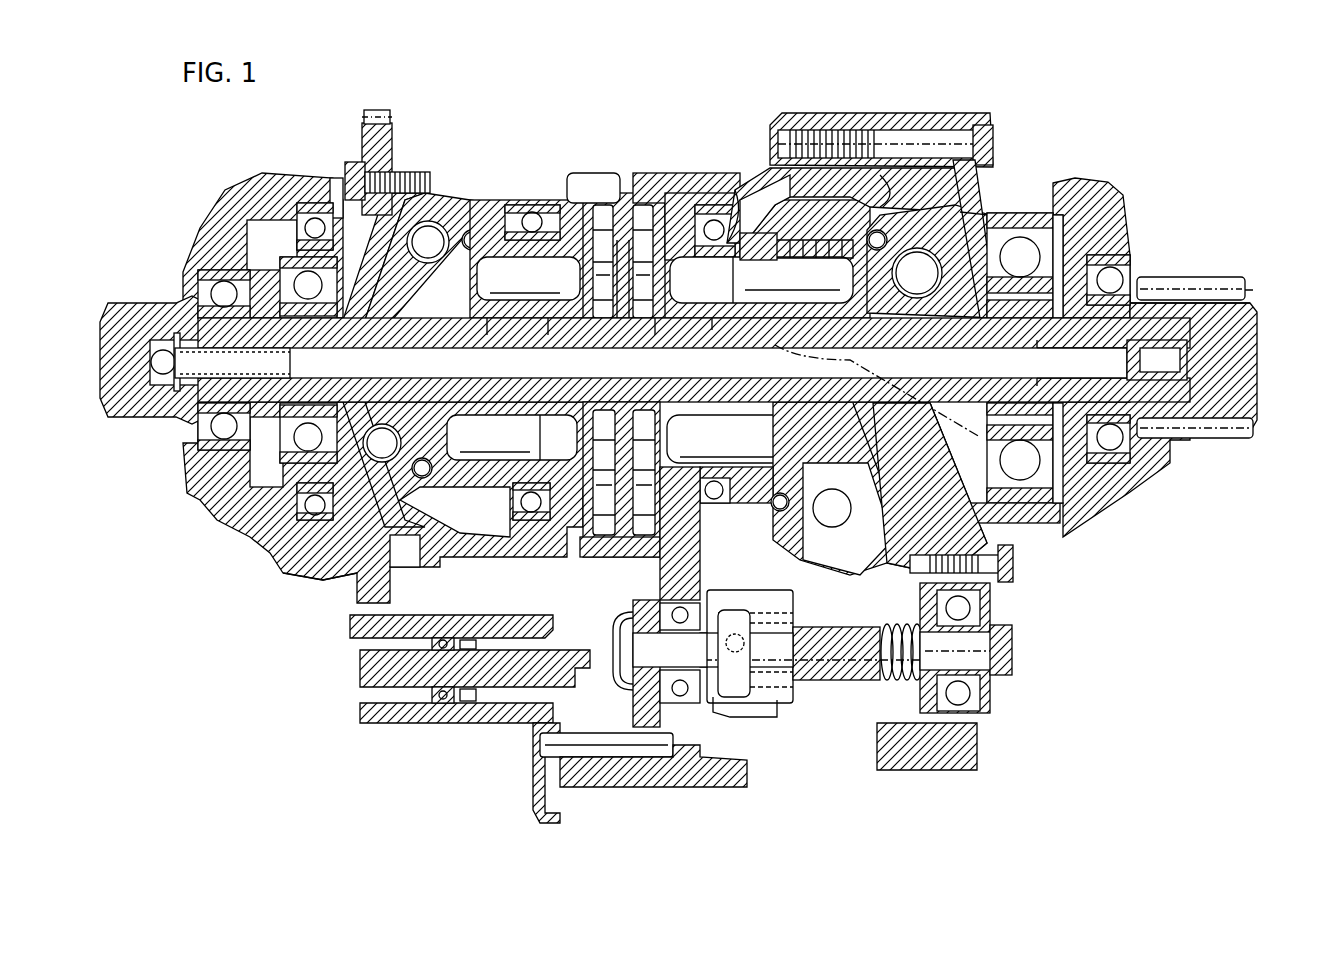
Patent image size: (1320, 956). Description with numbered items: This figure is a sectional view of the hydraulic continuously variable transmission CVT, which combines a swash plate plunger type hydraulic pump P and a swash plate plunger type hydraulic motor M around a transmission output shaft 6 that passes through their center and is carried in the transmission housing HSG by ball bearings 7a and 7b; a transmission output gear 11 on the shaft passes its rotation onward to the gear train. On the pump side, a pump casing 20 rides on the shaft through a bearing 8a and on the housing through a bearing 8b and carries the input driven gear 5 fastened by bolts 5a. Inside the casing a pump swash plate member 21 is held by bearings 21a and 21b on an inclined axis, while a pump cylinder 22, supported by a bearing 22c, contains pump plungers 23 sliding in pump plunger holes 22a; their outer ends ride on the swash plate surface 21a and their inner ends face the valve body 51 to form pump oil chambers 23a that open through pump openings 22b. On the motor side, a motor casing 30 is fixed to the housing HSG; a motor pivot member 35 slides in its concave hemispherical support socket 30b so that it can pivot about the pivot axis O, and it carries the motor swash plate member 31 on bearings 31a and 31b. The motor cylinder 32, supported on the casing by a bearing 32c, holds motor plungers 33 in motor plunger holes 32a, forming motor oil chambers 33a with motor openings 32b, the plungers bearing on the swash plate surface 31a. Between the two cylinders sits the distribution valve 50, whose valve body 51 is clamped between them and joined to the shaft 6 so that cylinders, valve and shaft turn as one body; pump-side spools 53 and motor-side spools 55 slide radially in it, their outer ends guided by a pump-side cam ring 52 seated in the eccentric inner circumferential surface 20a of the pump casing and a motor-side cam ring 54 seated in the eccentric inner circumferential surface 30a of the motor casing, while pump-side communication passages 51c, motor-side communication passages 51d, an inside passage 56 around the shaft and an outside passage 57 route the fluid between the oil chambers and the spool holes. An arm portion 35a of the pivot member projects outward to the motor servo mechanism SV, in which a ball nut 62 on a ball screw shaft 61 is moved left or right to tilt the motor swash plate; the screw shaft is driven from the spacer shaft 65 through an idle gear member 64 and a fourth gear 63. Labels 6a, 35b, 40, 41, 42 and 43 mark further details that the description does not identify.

The input driven gear 5 is at (365, 140).
The bolts 5a is at (348, 175).
The transmission output shaft 6 is at (895, 325).
The shaft bore 6a is at (388, 370).
The ball bearing 7a is at (185, 440).
The ball bearing 7b is at (1133, 442).
The bearing 8a is at (235, 500).
The bearing 8b is at (290, 520).
The transmission output gear 11 is at (1208, 283).
The pump casing 20 is at (503, 540).
The eccentric inner circumferential surface 20a is at (585, 560).
The pump swash plate member 21 is at (450, 270).
The bearing 21a is at (432, 197).
The bearing 21b is at (472, 212).
The pump cylinder 22 is at (487, 525).
The pump plunger hole 22a is at (502, 190).
The pump opening 22b is at (487, 335).
The bearing 22c is at (530, 545).
The pump plunger 23 is at (543, 288).
The pump oil chamber 23a is at (489, 446).
The motor casing 30 is at (910, 128).
The eccentric inner circumferential surface 30a is at (660, 565).
The concave hemispherical support socket 30b is at (892, 194).
The motor swash plate member 31 is at (818, 485).
The bearing 31a is at (965, 200).
The bearing 31b is at (862, 237).
The motor cylinder 32 is at (742, 225).
The motor plunger hole 32a is at (772, 252).
The motor opening 32b is at (712, 330).
The bearing 32c is at (718, 200).
The motor plunger 33 is at (834, 288).
The motor oil chamber 33a is at (722, 288).
The motor pivot member 35 is at (882, 565).
The arm portion 35a is at (795, 690).
The shaft end 35b is at (965, 345).
The spacer 40 is at (1066, 270).
The nut 41 is at (1012, 338).
The bearing 42 is at (1050, 225).
The housing cover 43 is at (1085, 225).
The distribution valve 50 is at (715, 192).
The valve body 51 is at (578, 190).
The pump-side communication passage 51c is at (548, 335).
The motor-side communication passage 51d is at (655, 335).
The pump-side cam ring 52 is at (602, 205).
The pump-side spool 53 is at (593, 502).
The motor-side cam ring 54 is at (658, 200).
The motor-side spool 55 is at (656, 502).
The inside passage 56 is at (605, 330).
The outside passage 57 is at (632, 205).
The ball screw shaft 61 is at (872, 677).
The ball nut 62 is at (752, 720).
The fourth gear 63 is at (615, 620).
The idle gear member 64 is at (600, 780).
The spacer shaft 65 is at (505, 722).
The transmission housing HSG is at (228, 207).
The swash plate plunger type hydraulic pump P is at (440, 112).
The swash plate plunger type hydraulic motor M is at (1003, 96).
The hydraulic continuously variable transmission CVT is at (1146, 83).
The motor servo mechanism SV is at (468, 762).
The pivot axis O is at (877, 391).